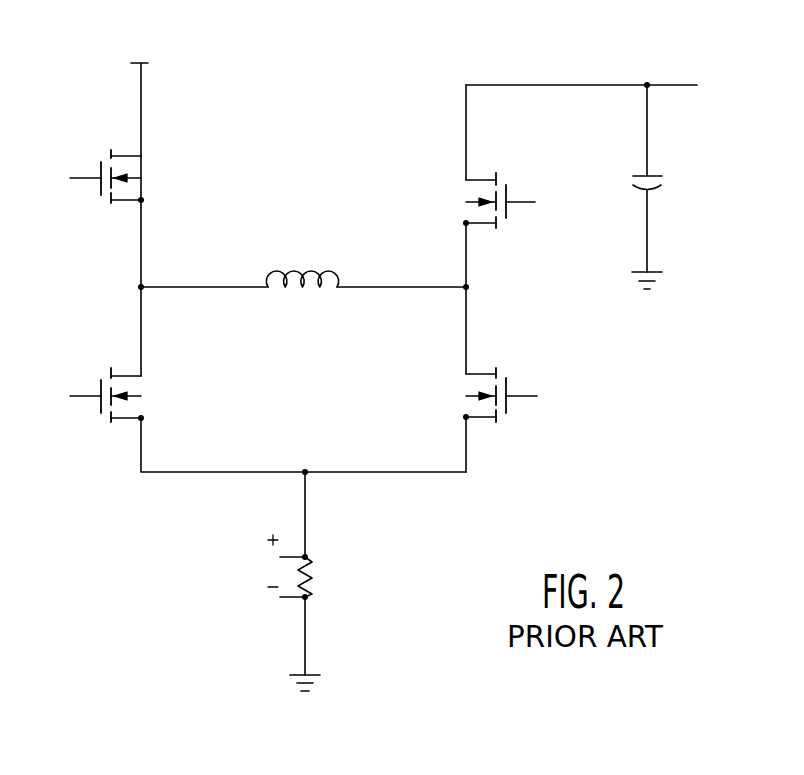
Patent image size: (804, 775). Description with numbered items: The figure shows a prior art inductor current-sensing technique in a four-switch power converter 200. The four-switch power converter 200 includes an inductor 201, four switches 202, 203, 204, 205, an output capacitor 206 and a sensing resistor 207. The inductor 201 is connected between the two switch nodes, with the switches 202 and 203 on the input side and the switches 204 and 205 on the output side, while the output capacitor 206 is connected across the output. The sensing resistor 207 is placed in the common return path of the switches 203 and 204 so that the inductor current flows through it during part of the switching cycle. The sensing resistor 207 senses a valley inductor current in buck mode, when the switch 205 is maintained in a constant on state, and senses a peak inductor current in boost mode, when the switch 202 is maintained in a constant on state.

The four-switch power converter 200 is at (331, 61).
The inductor 201 is at (303, 295).
The switch 202 is at (103, 146).
The switch 203 is at (102, 430).
The switch 204 is at (508, 365).
The switch 205 is at (508, 169).
The output capacitor 206 is at (668, 183).
The sensing resistor 207 is at (318, 556).